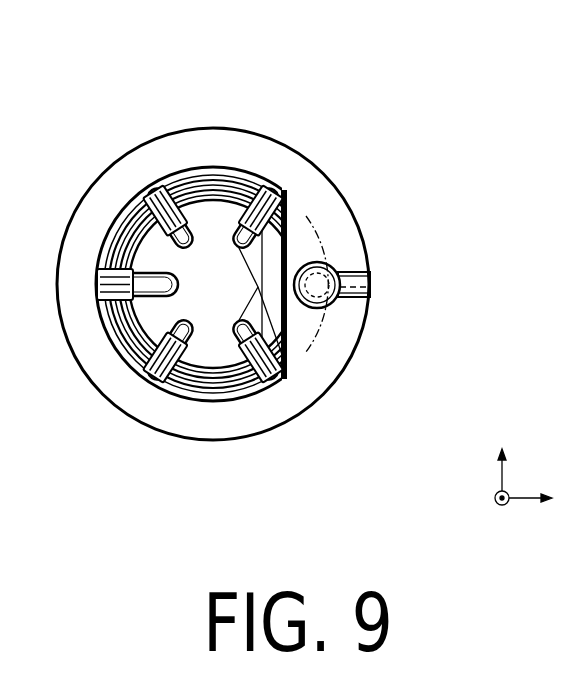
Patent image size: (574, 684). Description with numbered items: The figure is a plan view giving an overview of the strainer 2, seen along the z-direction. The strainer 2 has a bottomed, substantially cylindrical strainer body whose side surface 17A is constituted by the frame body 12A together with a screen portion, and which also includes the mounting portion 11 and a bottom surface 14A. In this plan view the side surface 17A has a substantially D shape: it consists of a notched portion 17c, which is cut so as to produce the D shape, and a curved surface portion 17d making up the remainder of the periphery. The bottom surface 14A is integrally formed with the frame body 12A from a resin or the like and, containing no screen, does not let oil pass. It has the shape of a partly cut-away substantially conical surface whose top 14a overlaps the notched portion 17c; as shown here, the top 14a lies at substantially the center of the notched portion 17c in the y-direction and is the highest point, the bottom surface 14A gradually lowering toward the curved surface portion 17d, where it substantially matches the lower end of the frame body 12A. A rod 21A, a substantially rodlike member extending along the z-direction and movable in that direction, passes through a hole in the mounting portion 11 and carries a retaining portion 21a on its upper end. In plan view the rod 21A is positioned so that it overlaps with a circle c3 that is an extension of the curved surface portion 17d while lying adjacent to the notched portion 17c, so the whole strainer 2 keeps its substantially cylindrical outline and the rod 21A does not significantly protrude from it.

The strainer 2 is at (426, 104).
The mounting portion 11 is at (333, 212).
The frame body 12A is at (160, 190).
The bottom surface 14A is at (157, 313).
The top 14a is at (286, 363).
The side surface 17A is at (221, 211).
The notched portion 17c is at (297, 207).
The curved surface portion 17d is at (223, 167).
The retaining portion 21a is at (334, 266).
The rod 21A is at (370, 287).
The circle c3 is at (333, 324).